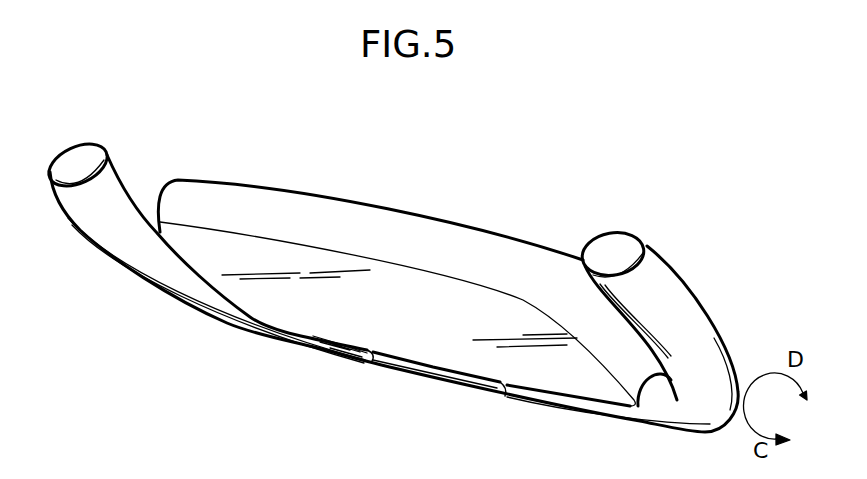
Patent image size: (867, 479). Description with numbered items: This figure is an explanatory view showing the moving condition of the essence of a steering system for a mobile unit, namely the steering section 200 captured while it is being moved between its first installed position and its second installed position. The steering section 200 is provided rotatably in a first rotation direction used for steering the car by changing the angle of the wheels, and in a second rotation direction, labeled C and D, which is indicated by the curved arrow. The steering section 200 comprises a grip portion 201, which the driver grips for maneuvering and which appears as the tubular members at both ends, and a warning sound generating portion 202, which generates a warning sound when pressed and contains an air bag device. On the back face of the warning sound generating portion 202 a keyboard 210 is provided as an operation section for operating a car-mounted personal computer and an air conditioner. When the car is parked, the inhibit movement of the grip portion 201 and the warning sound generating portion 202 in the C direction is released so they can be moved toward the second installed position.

The steering section 200 is at (449, 383).
The grip portion 201 is at (116, 248).
The warning sound generating portion 202 is at (315, 315).
The keyboard 210 is at (452, 222).